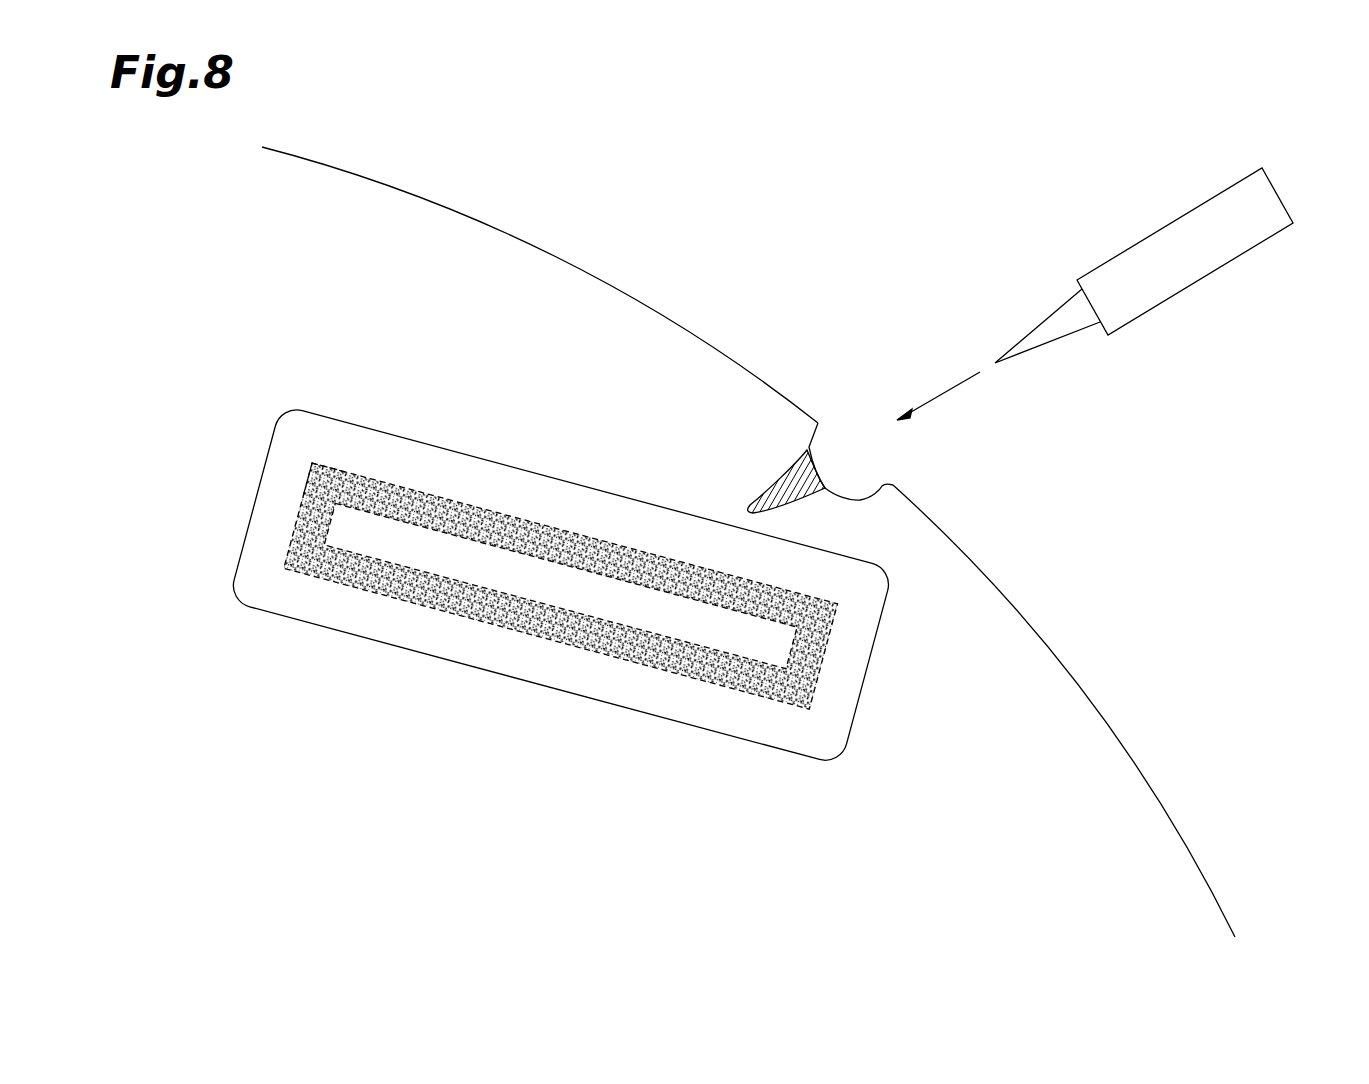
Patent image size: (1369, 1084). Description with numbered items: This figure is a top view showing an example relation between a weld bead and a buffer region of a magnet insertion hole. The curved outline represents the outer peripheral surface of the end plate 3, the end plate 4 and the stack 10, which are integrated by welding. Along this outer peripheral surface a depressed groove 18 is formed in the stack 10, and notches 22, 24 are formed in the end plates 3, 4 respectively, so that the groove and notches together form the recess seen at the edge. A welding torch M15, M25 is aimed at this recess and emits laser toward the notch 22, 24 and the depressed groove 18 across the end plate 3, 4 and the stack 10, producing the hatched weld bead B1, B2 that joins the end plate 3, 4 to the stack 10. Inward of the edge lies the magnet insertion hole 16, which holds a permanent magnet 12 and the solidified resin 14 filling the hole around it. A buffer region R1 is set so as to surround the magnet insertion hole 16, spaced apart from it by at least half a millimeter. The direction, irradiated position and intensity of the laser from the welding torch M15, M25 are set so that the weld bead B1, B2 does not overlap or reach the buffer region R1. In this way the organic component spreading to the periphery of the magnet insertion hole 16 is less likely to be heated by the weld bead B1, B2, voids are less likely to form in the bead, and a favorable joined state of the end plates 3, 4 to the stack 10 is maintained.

The end plate 3 is at (748, 542).
The end plate 4 is at (748, 542).
The stack 10 is at (1093, 699).
The depressed groove 18 is at (946, 461).
The notch 22 is at (946, 461).
The notch 24 is at (878, 490).
The weld bead B1 is at (797, 419).
The weld bead B2 is at (782, 465).
The welding torch M15 is at (1095, 287).
The welding torch M25 is at (1123, 252).
The buffer region R1 is at (575, 483).
The solidified resin 14 is at (396, 485).
The permanent magnet 12 is at (447, 540).
The magnet insertion hole 16 is at (320, 470).